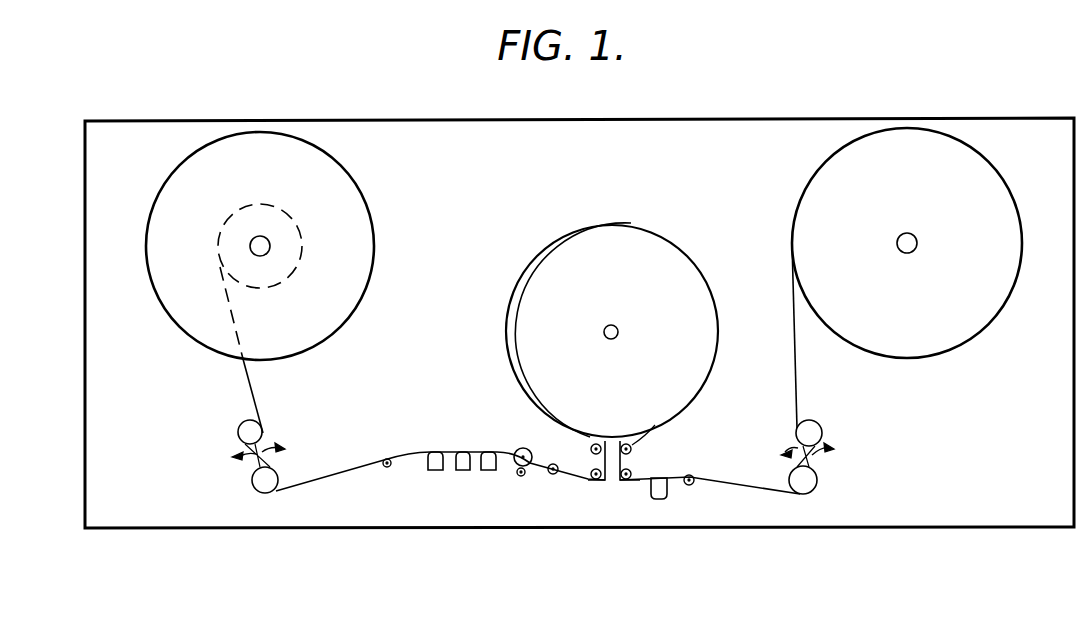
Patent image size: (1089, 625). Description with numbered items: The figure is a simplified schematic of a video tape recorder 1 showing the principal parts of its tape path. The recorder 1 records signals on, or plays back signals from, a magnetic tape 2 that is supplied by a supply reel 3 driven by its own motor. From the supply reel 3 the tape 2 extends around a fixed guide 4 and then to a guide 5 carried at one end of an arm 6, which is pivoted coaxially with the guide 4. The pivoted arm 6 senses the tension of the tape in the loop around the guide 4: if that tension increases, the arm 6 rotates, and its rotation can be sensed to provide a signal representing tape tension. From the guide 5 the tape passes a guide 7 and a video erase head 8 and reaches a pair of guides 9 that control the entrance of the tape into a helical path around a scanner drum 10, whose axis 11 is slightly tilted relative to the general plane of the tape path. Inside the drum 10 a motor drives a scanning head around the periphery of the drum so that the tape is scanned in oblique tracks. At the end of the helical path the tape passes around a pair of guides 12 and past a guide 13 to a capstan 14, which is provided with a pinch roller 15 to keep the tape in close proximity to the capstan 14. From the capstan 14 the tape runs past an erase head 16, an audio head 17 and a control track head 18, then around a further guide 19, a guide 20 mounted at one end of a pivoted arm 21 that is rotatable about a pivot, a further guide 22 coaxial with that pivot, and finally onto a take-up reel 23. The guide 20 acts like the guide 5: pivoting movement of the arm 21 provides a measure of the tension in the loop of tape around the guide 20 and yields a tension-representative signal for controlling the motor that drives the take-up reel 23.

The recorder 1 is at (686, 111).
The magnetic tape 2 is at (758, 486).
The supply reel 3 is at (826, 176).
The fixed guide 4 is at (800, 425).
The guide 5 is at (818, 484).
The arm 6 is at (815, 447).
The guide 7 is at (690, 485).
The video erase head 8 is at (660, 499).
The pair of guides 9 is at (632, 460).
The scanner drum 10 is at (598, 238).
The axis 11 is at (604, 331).
The pair of guides 12 is at (592, 462).
The guide 13 is at (555, 475).
The capstan 14 is at (521, 477).
The pinch roller 15 is at (522, 447).
The erase head 16 is at (489, 470).
The audio head 17 is at (463, 470).
The control track head 18 is at (435, 470).
The guide 19 is at (387, 468).
The guide 20 is at (280, 470).
The pivoted arm 21 is at (240, 452).
The guide 22 is at (243, 422).
The take-up reel 23 is at (343, 189).